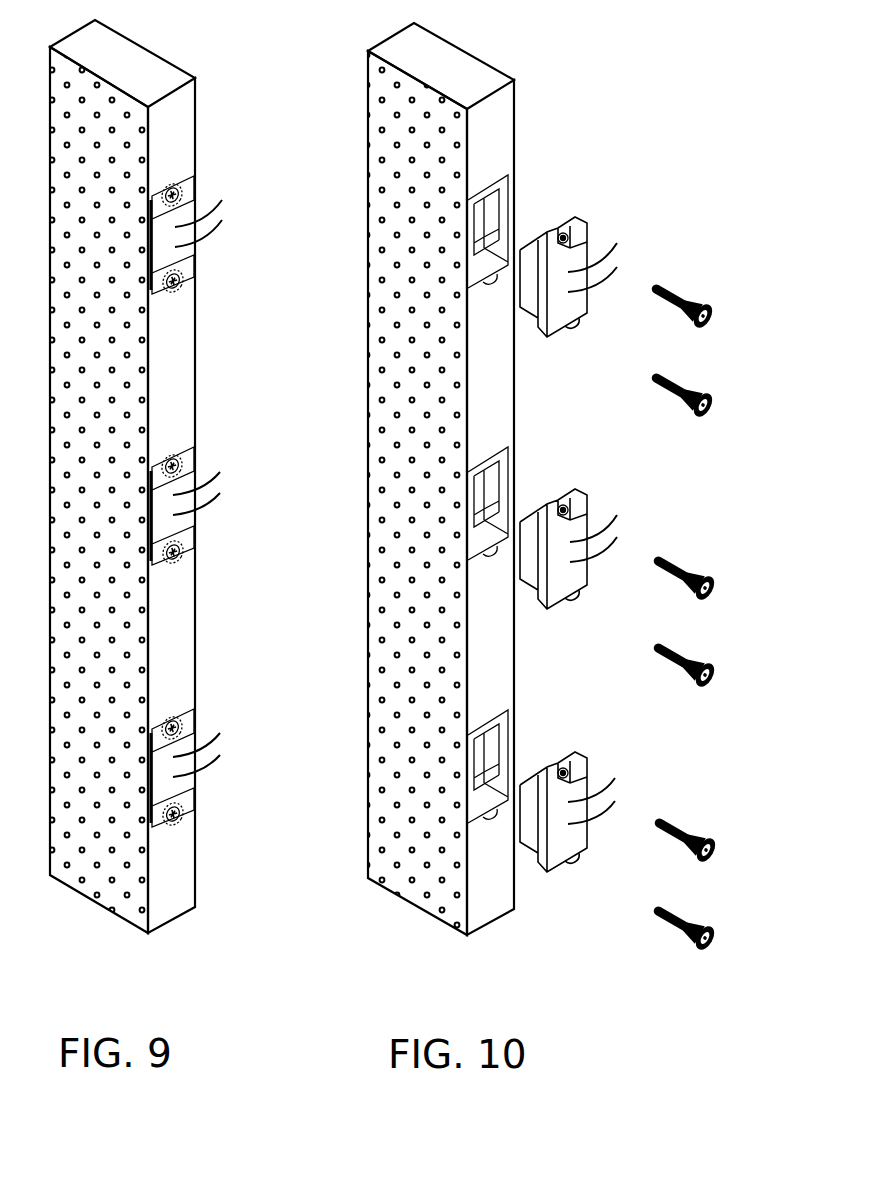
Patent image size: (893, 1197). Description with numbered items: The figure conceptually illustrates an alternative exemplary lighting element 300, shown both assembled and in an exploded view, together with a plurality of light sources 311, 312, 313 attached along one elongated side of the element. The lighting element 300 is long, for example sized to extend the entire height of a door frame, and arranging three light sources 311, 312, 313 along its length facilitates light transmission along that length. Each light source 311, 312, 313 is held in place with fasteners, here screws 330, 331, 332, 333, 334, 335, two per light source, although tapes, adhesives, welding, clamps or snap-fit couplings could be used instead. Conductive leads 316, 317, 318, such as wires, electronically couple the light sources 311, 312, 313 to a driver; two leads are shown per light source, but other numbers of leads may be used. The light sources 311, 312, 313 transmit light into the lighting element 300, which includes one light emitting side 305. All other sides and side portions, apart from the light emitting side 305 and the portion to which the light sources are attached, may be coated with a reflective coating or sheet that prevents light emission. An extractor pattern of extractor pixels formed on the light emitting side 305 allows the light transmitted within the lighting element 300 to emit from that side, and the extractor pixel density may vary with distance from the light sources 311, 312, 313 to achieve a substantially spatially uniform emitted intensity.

In FIG. 9, the lighting element 300 is at (203, 362).
In FIG. 10, the lighting element 300 is at (515, 400).
In FIG. 9, the light emitting side 305 is at (110, 855).
In FIG. 10, the light emitting side 305 is at (432, 842).
In FIG. 9, the light source 311 is at (197, 200).
In FIG. 10, the light source 311 is at (577, 258).
In FIG. 9, the light source 312 is at (185, 482).
In FIG. 10, the light source 312 is at (580, 530).
In FIG. 9, the light source 313 is at (185, 740).
In FIG. 10, the light source 313 is at (580, 788).
In FIG. 9, the conductive lead 316 is at (210, 237).
In FIG. 10, the conductive lead 316 is at (595, 288).
In FIG. 9, the conductive lead 317 is at (212, 502).
In FIG. 10, the conductive lead 317 is at (593, 557).
In FIG. 9, the third sensor 318 is at (212, 765).
In FIG. 10, the third sensor 318 is at (595, 820).
In FIG. 9, the screw 330 is at (192, 178).
In FIG. 10, the screw 330 is at (690, 303).
In FIG. 9, the screw 331 is at (183, 277).
In FIG. 10, the screw 331 is at (693, 393).
In FIG. 9, the screw 332 is at (190, 448).
In FIG. 10, the screw 332 is at (665, 568).
In FIG. 9, the screw 333 is at (183, 548).
In FIG. 10, the screw 333 is at (680, 653).
In FIG. 9, the screw 334 is at (190, 710).
In FIG. 10, the screw 334 is at (687, 837).
In FIG. 9, the screw 335 is at (178, 818).
In FIG. 10, the screw 335 is at (693, 917).